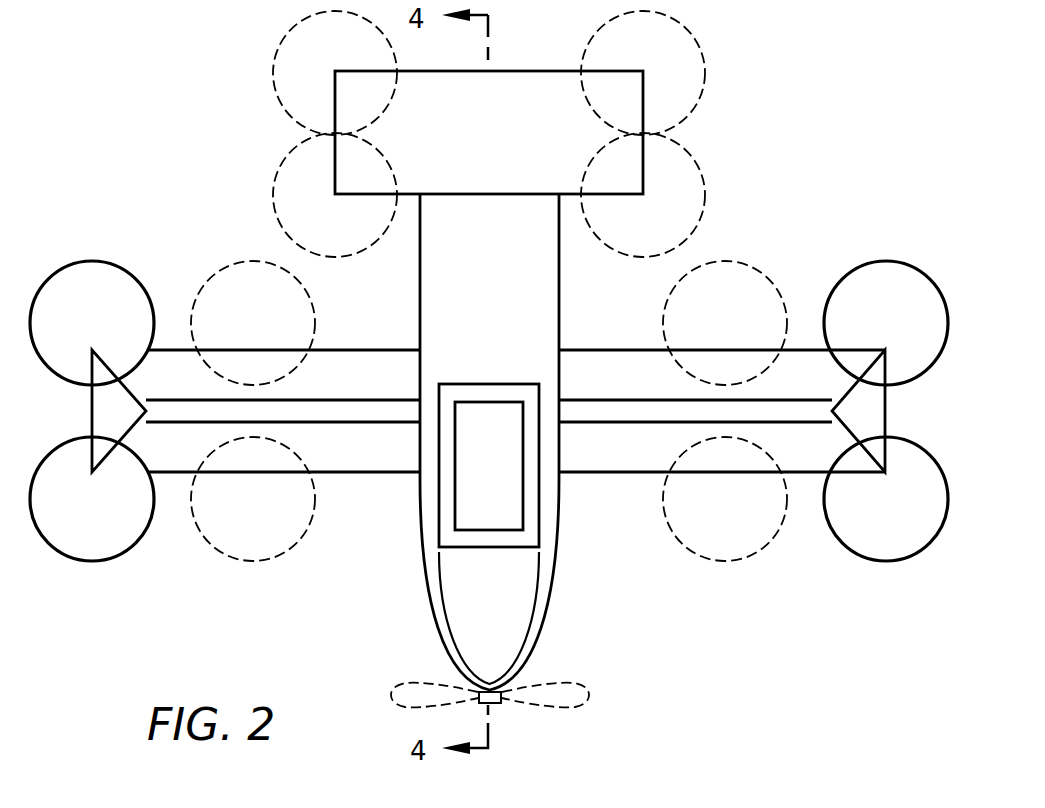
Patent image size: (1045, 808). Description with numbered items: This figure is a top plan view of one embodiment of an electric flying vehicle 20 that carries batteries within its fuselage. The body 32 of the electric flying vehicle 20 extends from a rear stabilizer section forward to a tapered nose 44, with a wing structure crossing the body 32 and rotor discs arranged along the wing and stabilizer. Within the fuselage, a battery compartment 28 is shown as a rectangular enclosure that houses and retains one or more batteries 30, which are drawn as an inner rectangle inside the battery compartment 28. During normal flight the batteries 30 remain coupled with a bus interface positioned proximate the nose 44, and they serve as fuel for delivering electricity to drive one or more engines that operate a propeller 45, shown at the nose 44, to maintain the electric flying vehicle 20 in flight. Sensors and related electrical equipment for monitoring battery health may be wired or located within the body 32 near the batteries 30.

The electric flying vehicle 20 is at (489, 380).
The battery compartment 28 is at (439, 515).
The battery 30 is at (523, 492).
The body 32 is at (558, 312).
The nose 44 is at (489, 694).
The propeller 45 is at (435, 685).